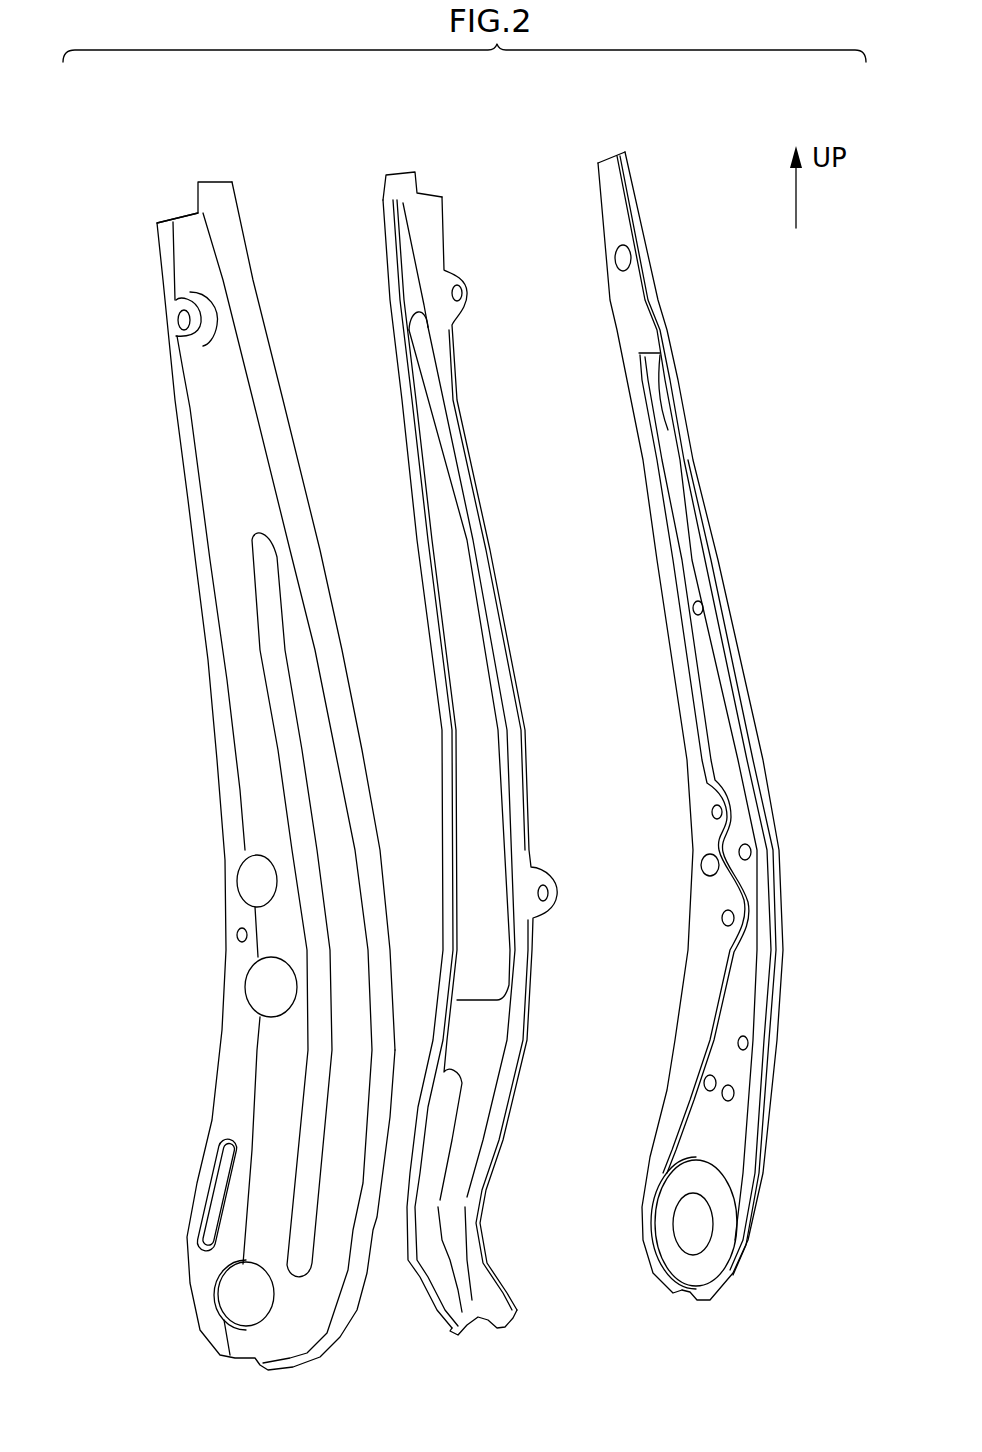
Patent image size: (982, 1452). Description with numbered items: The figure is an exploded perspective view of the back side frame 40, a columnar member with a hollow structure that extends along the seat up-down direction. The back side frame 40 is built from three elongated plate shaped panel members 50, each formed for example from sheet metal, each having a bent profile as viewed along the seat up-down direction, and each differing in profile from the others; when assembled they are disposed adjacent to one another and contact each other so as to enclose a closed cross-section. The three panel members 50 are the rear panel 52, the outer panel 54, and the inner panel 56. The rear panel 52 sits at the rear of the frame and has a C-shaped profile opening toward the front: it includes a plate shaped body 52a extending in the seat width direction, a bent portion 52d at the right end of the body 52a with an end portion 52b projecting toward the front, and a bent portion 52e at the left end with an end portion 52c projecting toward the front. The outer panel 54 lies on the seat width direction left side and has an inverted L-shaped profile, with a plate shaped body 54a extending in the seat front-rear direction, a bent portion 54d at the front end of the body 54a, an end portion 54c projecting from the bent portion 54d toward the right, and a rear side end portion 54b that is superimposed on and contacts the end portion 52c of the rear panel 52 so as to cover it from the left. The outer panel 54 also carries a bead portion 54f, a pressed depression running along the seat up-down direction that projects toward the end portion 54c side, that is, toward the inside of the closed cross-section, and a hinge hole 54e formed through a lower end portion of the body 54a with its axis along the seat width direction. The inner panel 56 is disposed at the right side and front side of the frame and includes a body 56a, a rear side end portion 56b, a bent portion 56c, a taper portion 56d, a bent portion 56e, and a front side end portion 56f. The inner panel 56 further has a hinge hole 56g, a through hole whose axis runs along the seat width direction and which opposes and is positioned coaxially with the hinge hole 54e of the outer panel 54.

The back side frame 40 is at (300, 122).
The panel members 50 is at (461, 730).
The rear panel 52 is at (407, 170).
The body 52a is at (405, 273).
The end portion 52b is at (382, 227).
The end portion 52c is at (437, 220).
The bent portion 52d is at (397, 380).
The bent portion 52e is at (440, 368).
The outer panel 54 is at (609, 160).
The body 54a is at (615, 190).
The rear side end portion 54b is at (607, 218).
The end portion 54c is at (633, 212).
The bent portion 54d is at (650, 253).
The hinge hole 54e is at (700, 1200).
The bead portion 54f is at (703, 662).
The inner panel 56 is at (215, 180).
The body 56a is at (185, 226).
The end portion 56b is at (178, 372).
The bent portion 56c is at (190, 408).
The taper portion 56d is at (244, 408).
The bent portion 56e is at (268, 462).
The end portion 56f is at (293, 497).
The hinge hole 56g is at (218, 1283).